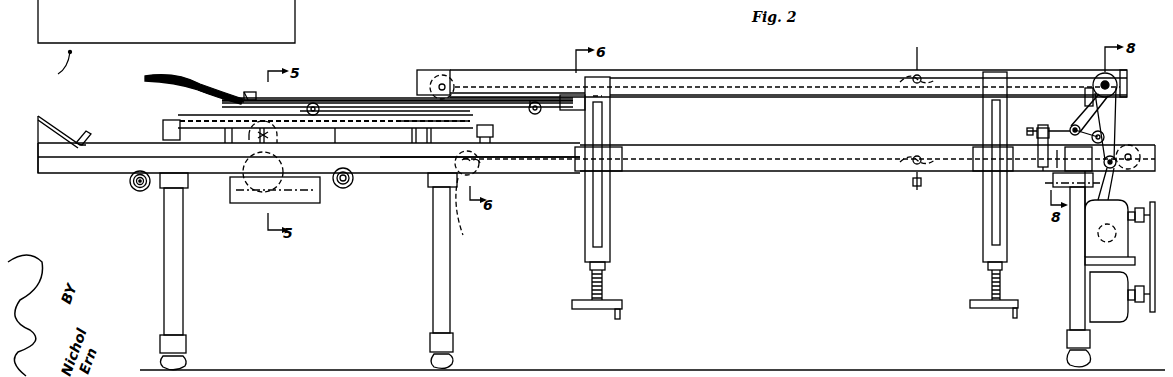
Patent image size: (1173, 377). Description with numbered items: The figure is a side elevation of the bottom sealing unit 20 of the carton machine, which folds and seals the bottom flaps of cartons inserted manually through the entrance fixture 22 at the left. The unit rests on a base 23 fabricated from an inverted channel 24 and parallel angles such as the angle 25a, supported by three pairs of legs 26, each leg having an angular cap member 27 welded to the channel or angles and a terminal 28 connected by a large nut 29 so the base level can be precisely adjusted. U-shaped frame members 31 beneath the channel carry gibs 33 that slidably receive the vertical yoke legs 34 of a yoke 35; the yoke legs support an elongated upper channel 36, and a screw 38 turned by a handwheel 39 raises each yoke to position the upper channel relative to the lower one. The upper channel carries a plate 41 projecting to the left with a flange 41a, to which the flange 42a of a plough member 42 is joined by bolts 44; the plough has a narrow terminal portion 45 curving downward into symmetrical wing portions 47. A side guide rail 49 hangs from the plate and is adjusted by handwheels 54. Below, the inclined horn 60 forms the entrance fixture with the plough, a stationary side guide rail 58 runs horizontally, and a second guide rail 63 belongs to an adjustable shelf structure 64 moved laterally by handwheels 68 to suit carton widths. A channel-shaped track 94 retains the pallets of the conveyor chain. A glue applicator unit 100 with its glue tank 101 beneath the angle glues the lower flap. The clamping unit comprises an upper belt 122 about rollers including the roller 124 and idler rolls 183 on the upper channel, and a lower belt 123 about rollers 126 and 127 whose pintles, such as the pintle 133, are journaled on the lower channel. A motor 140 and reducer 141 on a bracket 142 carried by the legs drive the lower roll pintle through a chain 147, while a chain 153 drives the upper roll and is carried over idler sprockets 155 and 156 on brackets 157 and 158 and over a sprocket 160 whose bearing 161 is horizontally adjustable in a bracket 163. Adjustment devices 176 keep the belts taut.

The bottom sealing unit 20 is at (51, 67).
The entrance fixture 22 is at (46, 101).
The base 23 is at (55, 182).
The inverted channel 24 is at (698, 175).
The angle 25a is at (394, 172).
The legs 26 is at (184, 311).
The angular cap member 27 is at (172, 178).
The terminals 28 is at (186, 364).
The large nuts 29 is at (187, 344).
The frame members 31 is at (587, 212).
The gibs 33 is at (614, 174).
The yoke legs 34 is at (612, 240).
The yoke 35 is at (607, 265).
The elongated channel 36 is at (726, 92).
The screws 38 is at (604, 285).
The handwheel 39 is at (622, 305).
The plate 41 is at (383, 100).
The flange 41a is at (252, 92).
The plough member 42 is at (184, 80).
The flange 42a is at (246, 92).
The bolts 44 is at (258, 96).
The narrow terminal portion 45 is at (146, 91).
The wing portions 47 is at (211, 100).
The side guide rail 49 is at (315, 103).
The handwheels 54 is at (530, 100).
The side guide rail 58 is at (88, 137).
The inclined horn 60 is at (38, 118).
The second guide rail 63 is at (42, 148).
The adjustable shelf structure 64 is at (166, 21).
The handwheels 68 is at (134, 191).
The track 94 is at (390, 110).
The glue applicator unit 100 is at (309, 206).
The glue tank 101 is at (240, 203).
The belt 122 is at (831, 97).
The belt 123 is at (881, 140).
The roller 124 is at (446, 73).
The roller 126 is at (480, 176).
The roller 127 is at (1150, 136).
The pintle 133 is at (471, 212).
The motor 140 is at (1106, 322).
The reducer 141 is at (1086, 243).
The bracket 142 is at (1085, 262).
The chain 147 is at (1150, 186).
The chain 153 is at (1116, 82).
The idler sprocket 155 is at (1086, 96).
The idler sprocket 156 is at (1104, 135).
The bracket 157 is at (1088, 105).
The bracket 158 is at (1112, 108).
The idler sprocket 160 is at (1071, 127).
The bearing 161 is at (1038, 127).
The bracket 163 is at (1043, 171).
The adjustment devices 176 is at (905, 190).
The idler rolls 183 is at (468, 80).